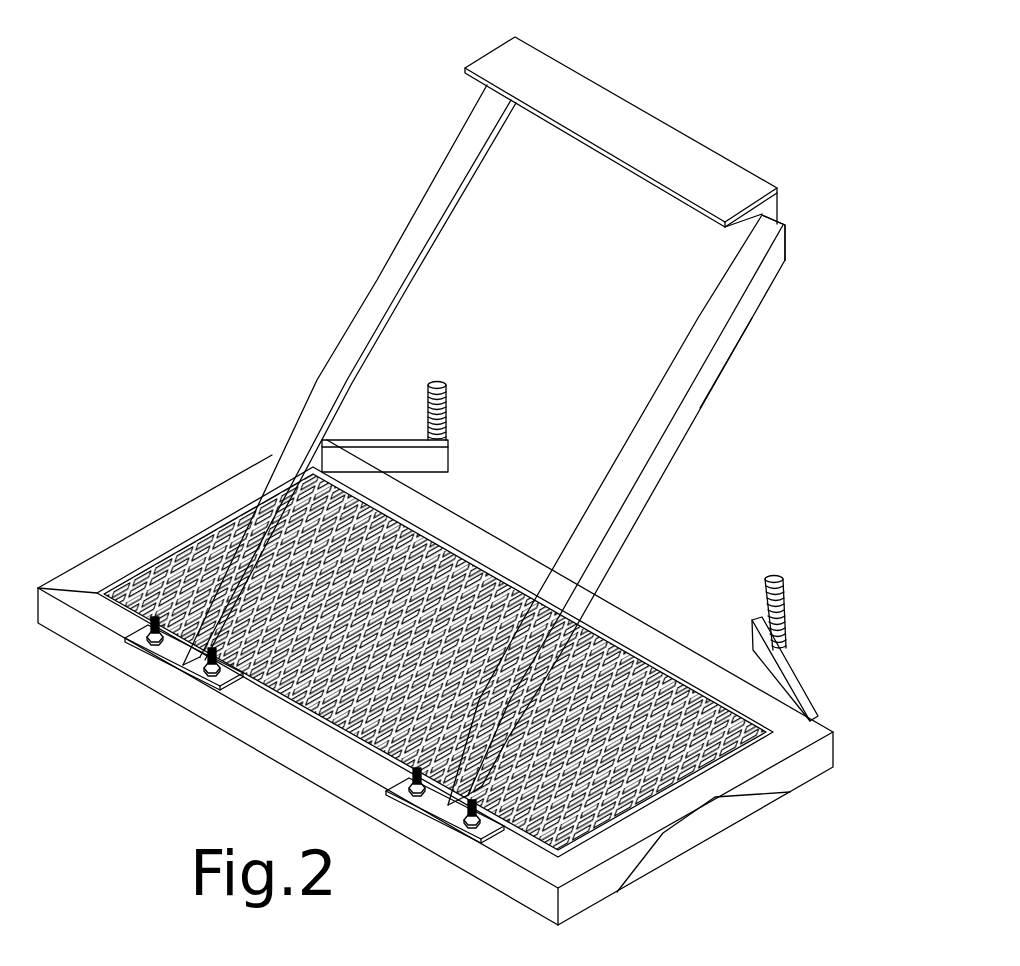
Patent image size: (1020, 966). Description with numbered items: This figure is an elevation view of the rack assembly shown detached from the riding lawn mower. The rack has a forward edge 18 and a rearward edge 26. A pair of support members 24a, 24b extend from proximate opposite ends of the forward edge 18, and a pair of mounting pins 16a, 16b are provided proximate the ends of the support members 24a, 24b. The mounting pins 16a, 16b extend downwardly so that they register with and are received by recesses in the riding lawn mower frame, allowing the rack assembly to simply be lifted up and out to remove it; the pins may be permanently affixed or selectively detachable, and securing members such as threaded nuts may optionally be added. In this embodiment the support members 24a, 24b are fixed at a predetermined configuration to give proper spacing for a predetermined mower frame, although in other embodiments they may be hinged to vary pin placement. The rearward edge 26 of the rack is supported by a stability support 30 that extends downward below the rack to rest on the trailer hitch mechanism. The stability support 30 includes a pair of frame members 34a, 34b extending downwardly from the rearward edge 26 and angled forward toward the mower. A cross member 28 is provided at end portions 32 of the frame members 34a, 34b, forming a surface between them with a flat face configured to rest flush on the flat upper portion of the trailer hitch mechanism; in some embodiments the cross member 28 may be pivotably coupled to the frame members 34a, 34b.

The mounting pin 16a is at (428, 382).
The mounting pin 16b is at (766, 575).
The forward edge 18 is at (462, 515).
The support member 24a is at (400, 455).
The support member 24b is at (783, 668).
The rearward edge 26 is at (265, 740).
The cross member 28 is at (624, 128).
The stability support 30 is at (730, 399).
The end portions 32 is at (800, 264).
The frame member 34a is at (403, 260).
The frame member 34b is at (645, 470).